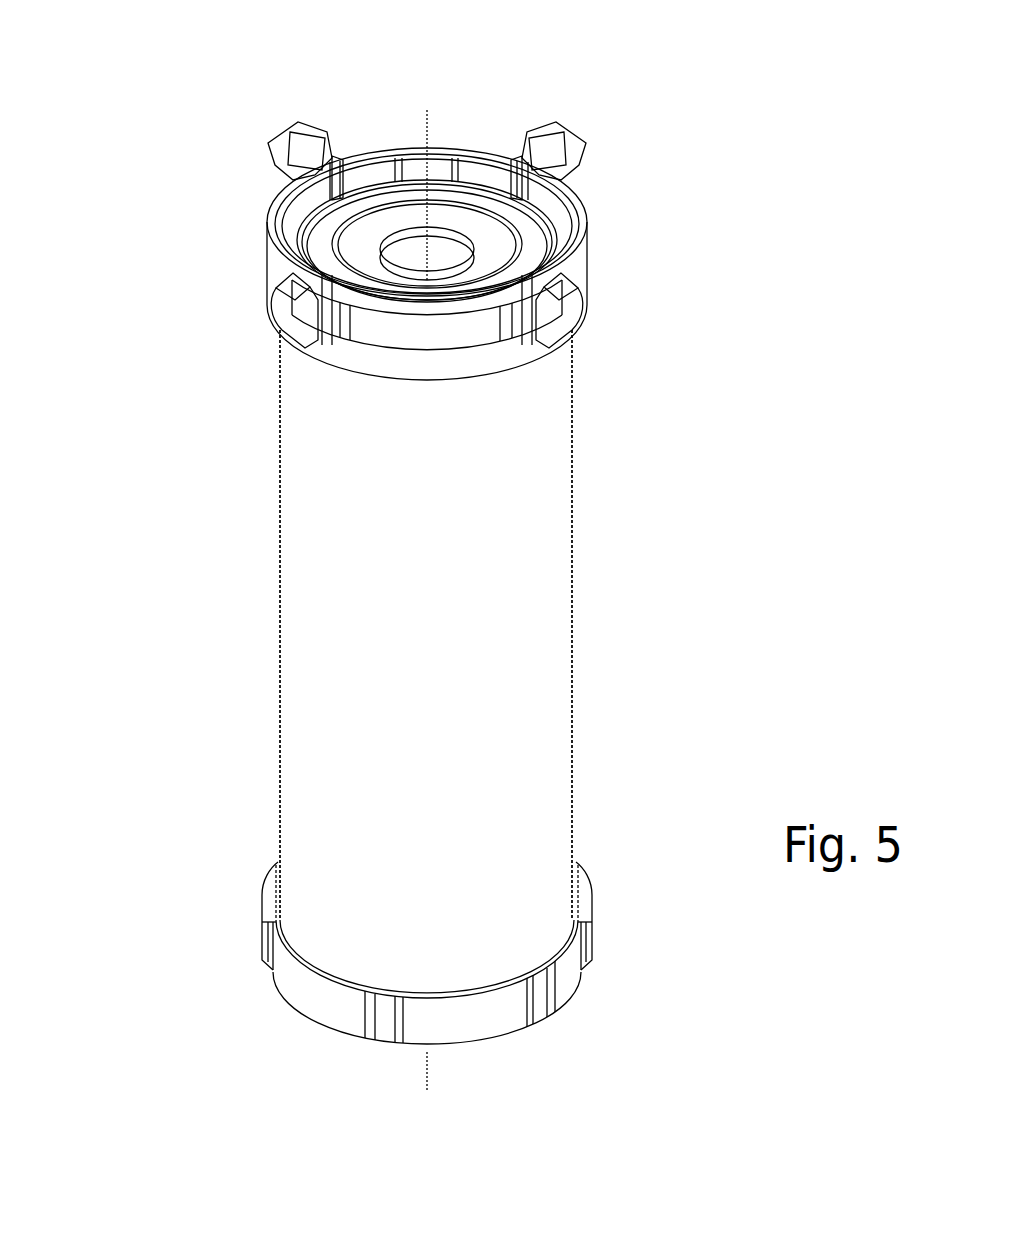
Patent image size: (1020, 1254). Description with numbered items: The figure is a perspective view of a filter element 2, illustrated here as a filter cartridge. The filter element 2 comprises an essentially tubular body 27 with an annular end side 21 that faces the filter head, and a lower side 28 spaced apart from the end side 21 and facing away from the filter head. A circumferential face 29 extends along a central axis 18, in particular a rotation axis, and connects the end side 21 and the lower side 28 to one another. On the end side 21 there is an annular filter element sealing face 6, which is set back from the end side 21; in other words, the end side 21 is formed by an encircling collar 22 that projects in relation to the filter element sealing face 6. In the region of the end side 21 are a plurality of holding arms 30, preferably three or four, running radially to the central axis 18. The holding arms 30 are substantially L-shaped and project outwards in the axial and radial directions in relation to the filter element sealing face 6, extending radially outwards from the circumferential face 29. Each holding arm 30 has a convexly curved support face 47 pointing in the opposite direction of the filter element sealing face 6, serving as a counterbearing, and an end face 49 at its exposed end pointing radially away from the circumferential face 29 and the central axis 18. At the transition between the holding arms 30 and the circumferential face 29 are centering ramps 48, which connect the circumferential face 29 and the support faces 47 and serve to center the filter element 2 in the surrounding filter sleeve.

The filter element 2 is at (180, 242).
The filter element sealing face 6 is at (389, 193).
The central axis 18 is at (427, 110).
The end side 21 is at (503, 163).
The encircling collar 22 is at (570, 258).
The tubular body 27 is at (265, 585).
The lower side 28 is at (402, 1063).
The circumferential face 29 is at (317, 735).
The holding arm 30 is at (292, 297).
The support face 47 is at (571, 321).
The centering ramp 48 is at (305, 332).
The end face 49 is at (573, 306).